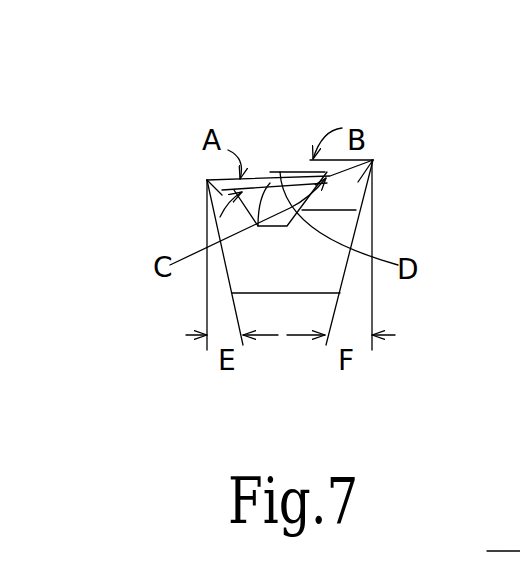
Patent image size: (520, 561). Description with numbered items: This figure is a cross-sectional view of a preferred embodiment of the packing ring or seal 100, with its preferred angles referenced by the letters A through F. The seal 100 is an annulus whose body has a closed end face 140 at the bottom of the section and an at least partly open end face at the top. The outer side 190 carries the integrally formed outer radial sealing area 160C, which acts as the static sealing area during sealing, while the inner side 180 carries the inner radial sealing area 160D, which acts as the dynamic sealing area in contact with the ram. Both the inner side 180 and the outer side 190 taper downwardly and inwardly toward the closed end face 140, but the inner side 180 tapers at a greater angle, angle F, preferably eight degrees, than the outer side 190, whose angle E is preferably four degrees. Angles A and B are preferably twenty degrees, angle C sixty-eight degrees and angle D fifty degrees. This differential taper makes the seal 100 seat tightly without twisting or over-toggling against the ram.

The seal 100 is at (291, 156).
The closed end face 140 is at (282, 293).
The outer radial sealing area 160C is at (207, 180).
The inner radial sealing area 160D is at (373, 160).
The inner side 180 is at (355, 228).
The outer side 190 is at (226, 269).